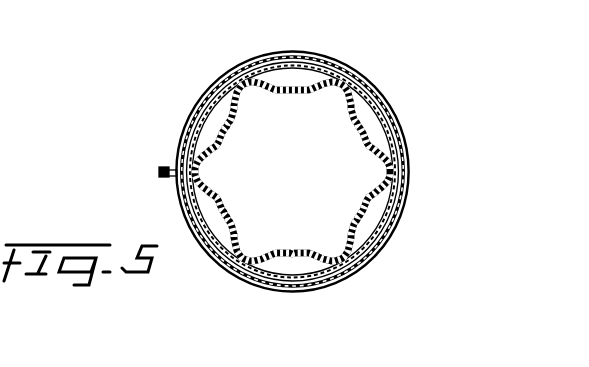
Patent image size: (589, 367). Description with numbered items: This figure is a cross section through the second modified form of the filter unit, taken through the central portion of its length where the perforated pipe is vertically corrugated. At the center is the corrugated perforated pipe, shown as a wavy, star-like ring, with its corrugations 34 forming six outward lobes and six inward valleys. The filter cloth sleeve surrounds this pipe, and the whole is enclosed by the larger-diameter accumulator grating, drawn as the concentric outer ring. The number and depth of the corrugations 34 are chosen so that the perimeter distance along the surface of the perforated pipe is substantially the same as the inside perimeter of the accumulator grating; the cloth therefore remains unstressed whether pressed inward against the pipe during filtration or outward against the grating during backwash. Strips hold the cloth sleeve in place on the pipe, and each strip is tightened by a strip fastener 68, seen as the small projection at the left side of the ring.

The corrugations 34 is at (293, 85).
The strip fastener 68 is at (165, 182).